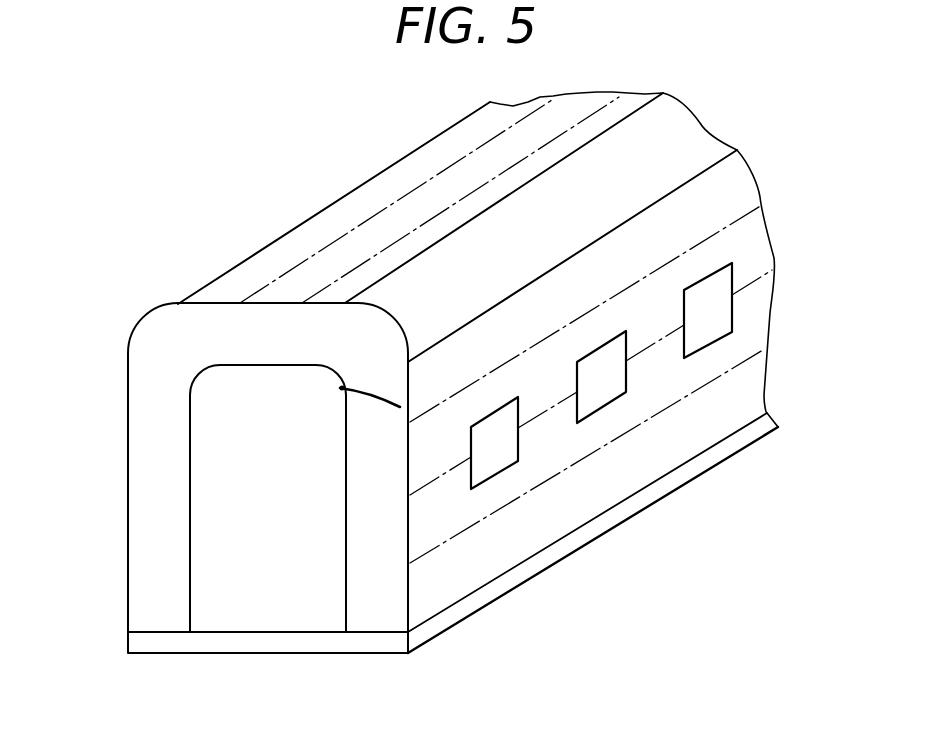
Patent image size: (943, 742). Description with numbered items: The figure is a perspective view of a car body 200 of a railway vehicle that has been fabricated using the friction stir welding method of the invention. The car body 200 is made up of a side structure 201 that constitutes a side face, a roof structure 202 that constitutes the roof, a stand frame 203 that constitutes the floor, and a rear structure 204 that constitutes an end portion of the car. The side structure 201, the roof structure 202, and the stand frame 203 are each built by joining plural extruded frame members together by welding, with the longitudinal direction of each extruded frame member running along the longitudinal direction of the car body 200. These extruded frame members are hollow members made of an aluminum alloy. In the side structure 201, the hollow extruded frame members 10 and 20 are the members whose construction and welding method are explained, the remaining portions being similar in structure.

The hollow extruded frame member 10 is at (742, 391).
The hollow extruded frame member 20 is at (750, 303).
The car body 200 is at (96, 443).
The side structure 201 is at (687, 445).
The roof structure 202 is at (387, 218).
The stand frame 203 is at (507, 585).
The rear structure 204 is at (385, 618).